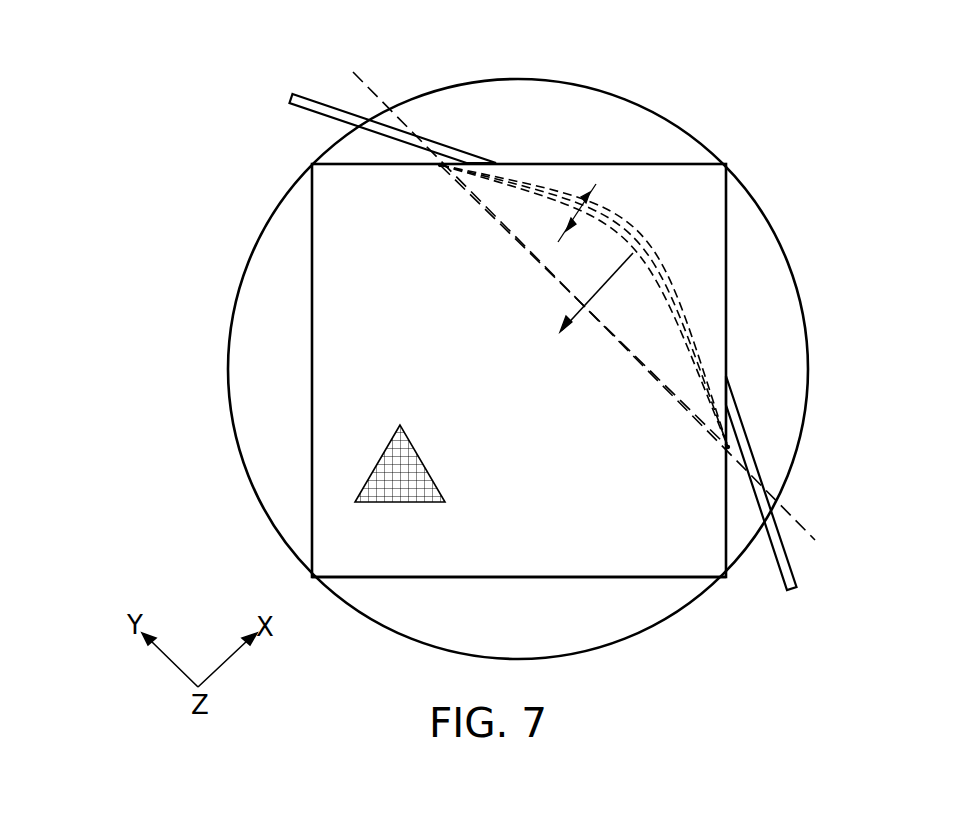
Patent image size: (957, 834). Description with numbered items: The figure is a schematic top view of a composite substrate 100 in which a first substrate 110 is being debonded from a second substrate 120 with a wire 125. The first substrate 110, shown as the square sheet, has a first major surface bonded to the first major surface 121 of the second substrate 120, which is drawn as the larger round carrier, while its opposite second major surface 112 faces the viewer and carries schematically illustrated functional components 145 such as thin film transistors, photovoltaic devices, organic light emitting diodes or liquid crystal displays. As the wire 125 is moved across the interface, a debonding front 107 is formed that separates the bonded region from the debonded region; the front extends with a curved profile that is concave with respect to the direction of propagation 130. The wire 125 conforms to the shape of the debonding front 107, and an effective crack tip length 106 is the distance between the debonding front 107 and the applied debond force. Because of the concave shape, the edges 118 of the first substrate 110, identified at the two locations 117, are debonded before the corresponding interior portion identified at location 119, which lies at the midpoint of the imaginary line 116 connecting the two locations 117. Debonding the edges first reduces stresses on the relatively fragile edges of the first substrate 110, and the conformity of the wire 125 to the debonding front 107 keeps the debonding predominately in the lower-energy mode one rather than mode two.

The composite substrate 100 is at (160, 232).
The effective crack tip length 106 is at (592, 192).
The debonding front 107 is at (503, 188).
The first substrate 110 is at (327, 233).
The second major surface 112 is at (407, 372).
The imaginary line 116 is at (652, 383).
The locations 117 is at (438, 166).
The edges 118 is at (611, 163).
The location 119 is at (582, 307).
The second substrate 120 is at (767, 277).
The first major surface 121 is at (500, 630).
The wire 125 is at (314, 94).
The direction of propagation 130 is at (556, 333).
The functional components 145 is at (420, 460).